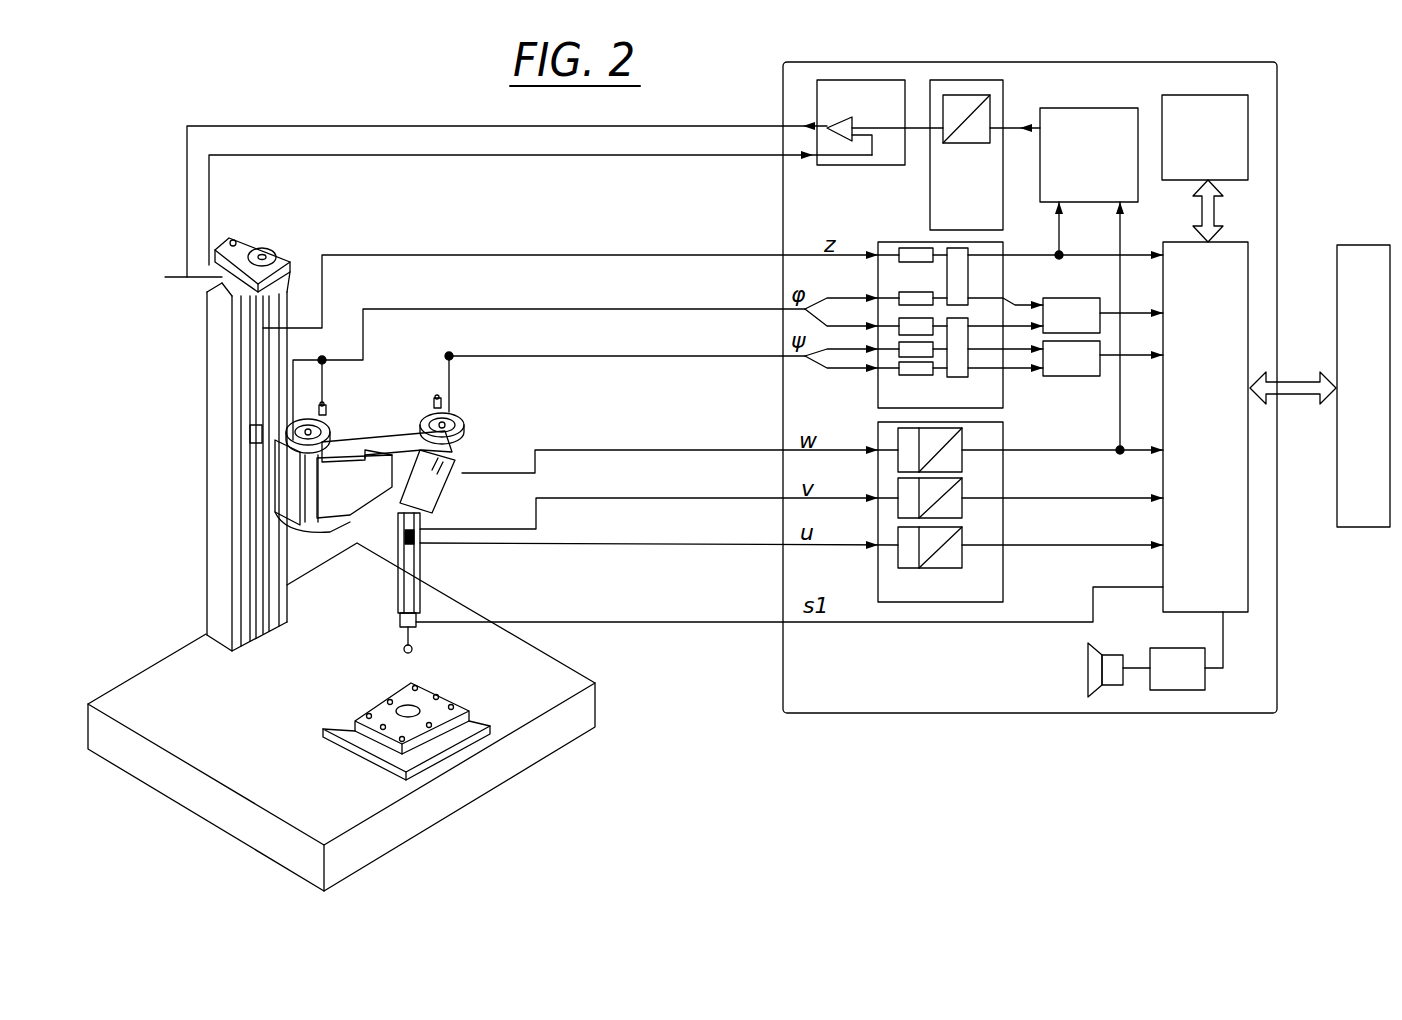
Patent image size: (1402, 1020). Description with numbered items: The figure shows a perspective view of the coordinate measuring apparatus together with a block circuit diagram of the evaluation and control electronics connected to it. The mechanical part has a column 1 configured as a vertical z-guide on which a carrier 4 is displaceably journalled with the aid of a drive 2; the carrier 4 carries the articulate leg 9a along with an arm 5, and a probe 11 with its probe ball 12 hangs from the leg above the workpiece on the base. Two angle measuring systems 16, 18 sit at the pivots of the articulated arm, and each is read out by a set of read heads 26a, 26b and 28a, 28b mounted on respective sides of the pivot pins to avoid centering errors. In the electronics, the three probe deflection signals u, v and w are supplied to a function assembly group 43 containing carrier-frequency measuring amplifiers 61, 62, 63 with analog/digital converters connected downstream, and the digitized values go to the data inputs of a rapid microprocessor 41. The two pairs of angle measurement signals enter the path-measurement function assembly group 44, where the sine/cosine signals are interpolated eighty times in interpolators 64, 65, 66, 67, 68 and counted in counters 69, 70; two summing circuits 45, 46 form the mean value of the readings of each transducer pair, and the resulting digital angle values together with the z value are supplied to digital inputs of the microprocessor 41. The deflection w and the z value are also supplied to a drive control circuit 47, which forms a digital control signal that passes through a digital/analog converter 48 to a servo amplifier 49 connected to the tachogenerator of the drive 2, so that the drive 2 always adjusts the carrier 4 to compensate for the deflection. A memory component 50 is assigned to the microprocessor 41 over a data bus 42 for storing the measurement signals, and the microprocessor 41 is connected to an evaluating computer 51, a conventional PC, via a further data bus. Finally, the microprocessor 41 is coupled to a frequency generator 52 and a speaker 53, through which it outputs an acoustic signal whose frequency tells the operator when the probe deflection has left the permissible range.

The column 1 is at (213, 590).
The drive 2 is at (150, 284).
The carrier 4 is at (283, 553).
The arm 5 is at (393, 435).
The articulate leg 9a is at (430, 485).
The probe 11 is at (405, 597).
The probe ball 12 is at (415, 646).
The angle measuring system 16 is at (330, 432).
The angle measuring system 18 is at (466, 425).
The read head 26a is at (262, 425).
The read head 26b is at (327, 415).
The read head 28a is at (437, 398).
The read head 28b is at (455, 412).
The microprocessor 41 is at (1233, 330).
The data bus 42 is at (1210, 208).
The function assembly group 43 is at (878, 583).
The function assembly group 44 is at (1000, 408).
The summing circuit 45 is at (1073, 360).
The summing circuit 46 is at (1071, 310).
The drive control circuit 47 is at (1073, 118).
The digital/analog converter 48 is at (970, 82).
The servo amplifier 49 is at (862, 87).
The memory component 50 is at (1225, 107).
The evaluating computer 51 is at (1350, 532).
The frequency generator 52 is at (1207, 680).
The speaker 53 is at (1088, 668).
The carrier-frequency measuring amplifier 61 is at (962, 560).
The carrier-frequency measuring amplifier 62 is at (962, 510).
The carrier-frequency measuring amplifier 63 is at (962, 460).
The interpolator 64 is at (928, 374).
The interpolator 65 is at (907, 349).
The interpolator 66 is at (927, 324).
The interpolator 67 is at (904, 300).
The interpolator 68 is at (913, 250).
The counter 69 is at (972, 362).
The counter 70 is at (958, 263).